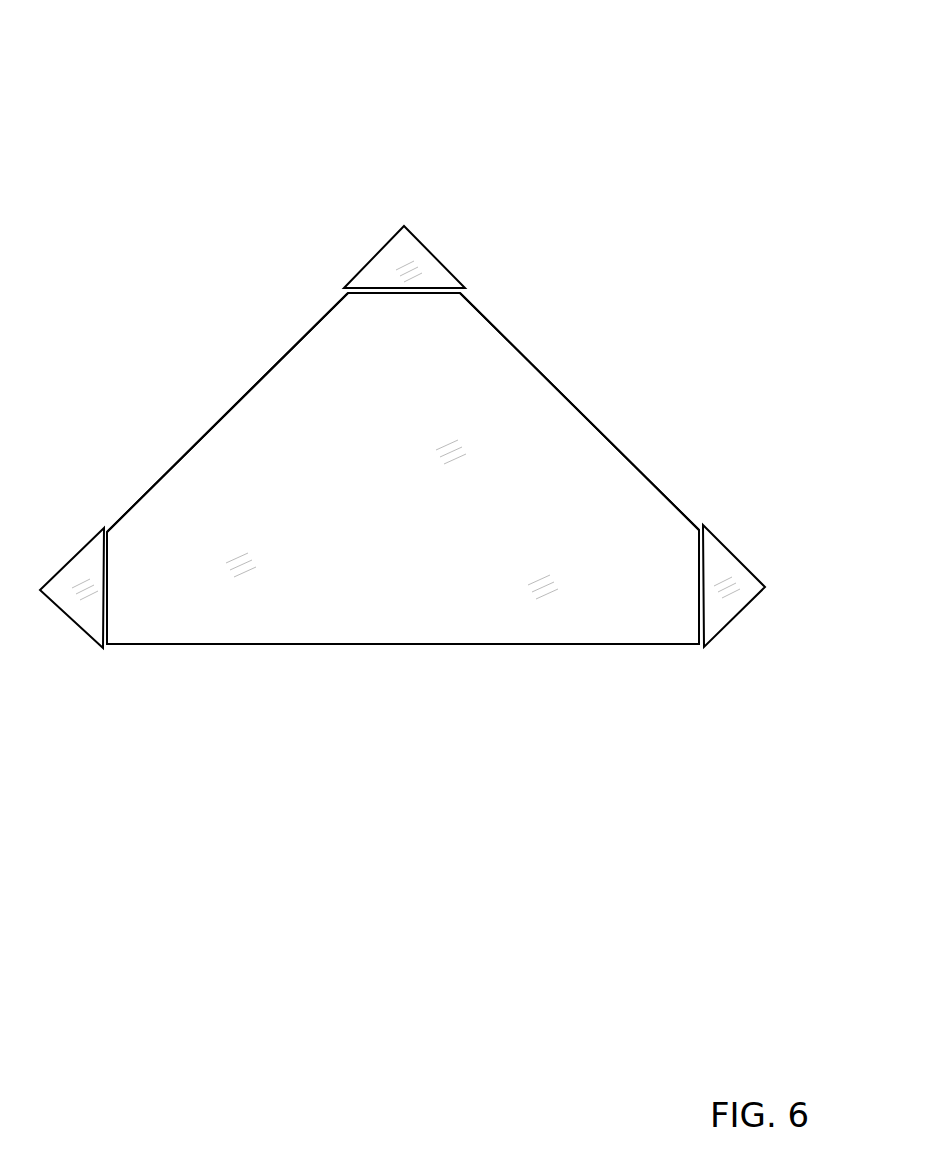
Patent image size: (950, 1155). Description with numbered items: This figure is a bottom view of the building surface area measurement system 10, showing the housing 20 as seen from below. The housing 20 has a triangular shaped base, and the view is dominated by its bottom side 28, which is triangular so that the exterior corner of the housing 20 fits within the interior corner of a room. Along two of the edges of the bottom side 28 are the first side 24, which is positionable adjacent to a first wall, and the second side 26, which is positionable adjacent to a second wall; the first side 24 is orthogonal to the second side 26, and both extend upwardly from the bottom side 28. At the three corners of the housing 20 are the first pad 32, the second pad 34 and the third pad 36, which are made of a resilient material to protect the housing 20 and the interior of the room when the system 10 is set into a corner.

The building surface area measurement system 10 is at (152, 119).
The housing 20 is at (268, 645).
The first side 24 is at (262, 380).
The second side 26 is at (615, 447).
The bottom side 28 is at (458, 395).
The first pad 32 is at (85, 622).
The second pad 34 is at (718, 617).
The third pad 36 is at (433, 275).